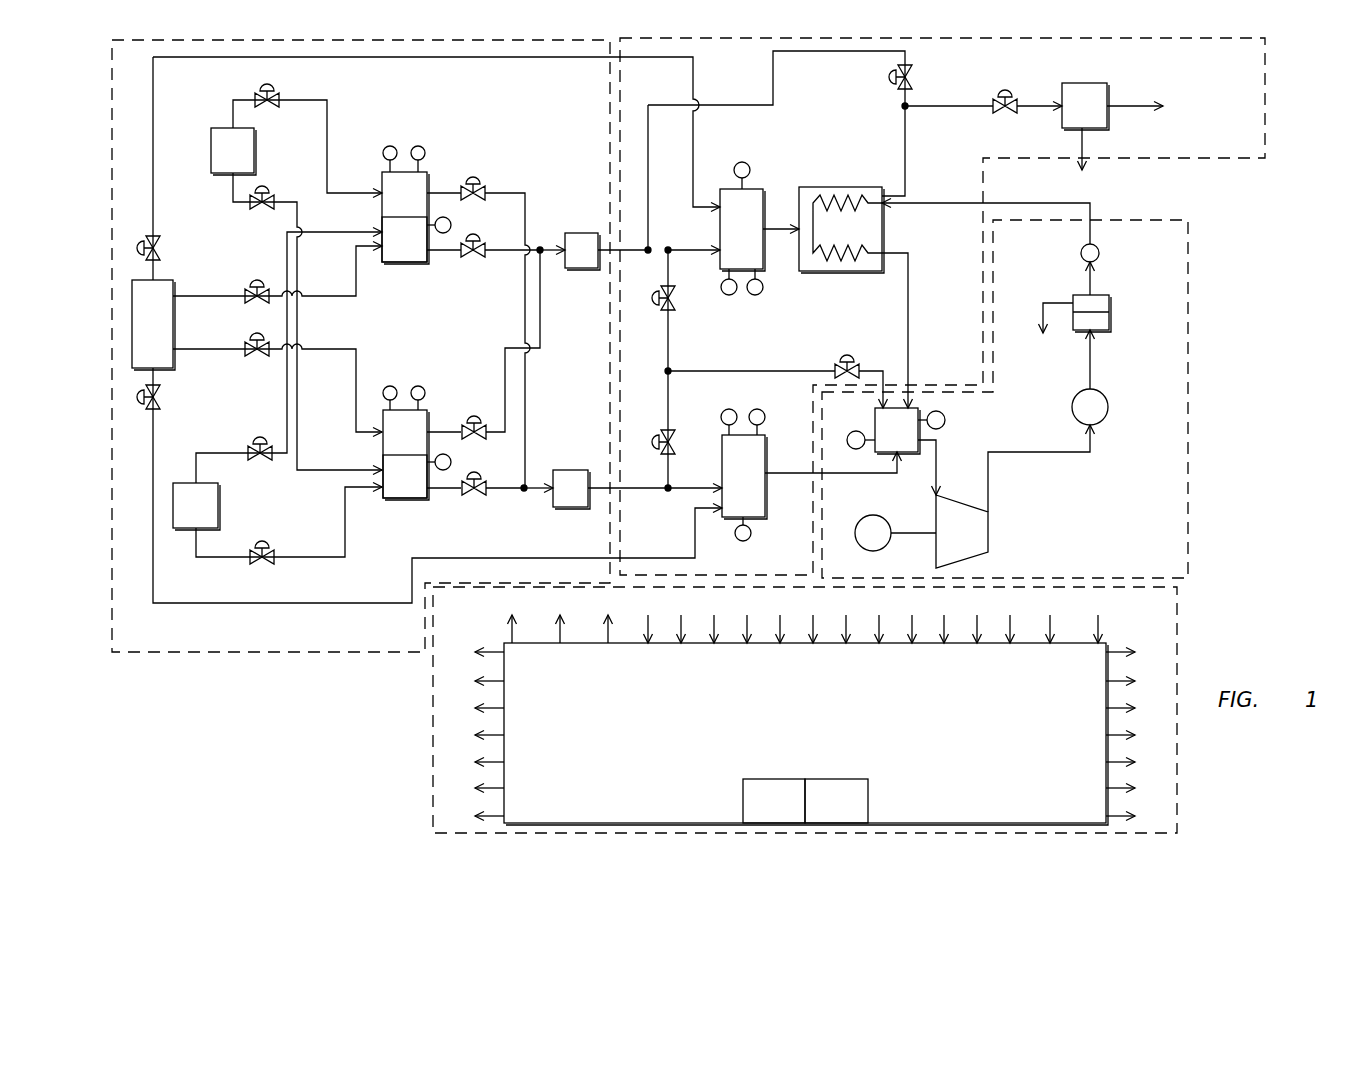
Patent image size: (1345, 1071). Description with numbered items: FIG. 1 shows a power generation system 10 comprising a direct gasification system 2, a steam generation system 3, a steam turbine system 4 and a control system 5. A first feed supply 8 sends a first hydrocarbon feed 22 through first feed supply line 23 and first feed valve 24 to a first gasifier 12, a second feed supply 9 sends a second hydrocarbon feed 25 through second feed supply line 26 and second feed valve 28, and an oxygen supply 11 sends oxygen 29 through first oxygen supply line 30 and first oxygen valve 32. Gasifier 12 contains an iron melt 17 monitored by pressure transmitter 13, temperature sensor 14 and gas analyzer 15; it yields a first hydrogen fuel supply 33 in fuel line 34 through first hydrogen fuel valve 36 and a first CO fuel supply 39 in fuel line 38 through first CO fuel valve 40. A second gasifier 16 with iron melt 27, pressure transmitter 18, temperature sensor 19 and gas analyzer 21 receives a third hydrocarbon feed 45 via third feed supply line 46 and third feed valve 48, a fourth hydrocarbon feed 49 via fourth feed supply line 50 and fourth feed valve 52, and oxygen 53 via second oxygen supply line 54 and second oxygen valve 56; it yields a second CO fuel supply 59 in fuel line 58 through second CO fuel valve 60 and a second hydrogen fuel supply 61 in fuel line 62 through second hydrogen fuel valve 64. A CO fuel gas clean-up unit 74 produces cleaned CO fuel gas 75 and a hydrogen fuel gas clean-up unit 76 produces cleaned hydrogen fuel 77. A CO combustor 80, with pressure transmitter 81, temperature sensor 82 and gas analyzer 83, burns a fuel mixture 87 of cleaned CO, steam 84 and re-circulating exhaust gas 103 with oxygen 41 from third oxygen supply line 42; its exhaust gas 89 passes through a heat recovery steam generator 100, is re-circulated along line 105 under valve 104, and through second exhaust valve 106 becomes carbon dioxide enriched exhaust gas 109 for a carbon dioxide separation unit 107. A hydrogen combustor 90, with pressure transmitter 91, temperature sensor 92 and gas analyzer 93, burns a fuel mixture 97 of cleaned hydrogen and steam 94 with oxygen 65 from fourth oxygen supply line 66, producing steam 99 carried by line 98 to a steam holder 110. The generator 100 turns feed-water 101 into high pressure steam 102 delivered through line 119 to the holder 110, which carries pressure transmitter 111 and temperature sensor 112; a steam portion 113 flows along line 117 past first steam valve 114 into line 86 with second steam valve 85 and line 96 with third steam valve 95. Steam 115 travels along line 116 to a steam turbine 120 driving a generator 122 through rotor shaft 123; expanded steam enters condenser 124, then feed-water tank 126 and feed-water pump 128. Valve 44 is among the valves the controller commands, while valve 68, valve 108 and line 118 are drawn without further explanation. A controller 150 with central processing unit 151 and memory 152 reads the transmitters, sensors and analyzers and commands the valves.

The direct gasification system 2 is at (215, 657).
The steam generation system 3 is at (1245, 162).
The steam turbine system 4 is at (1190, 347).
The control system 5 is at (1180, 645).
The first feed supply 8 is at (240, 162).
The second feed supply 9 is at (204, 517).
The power generation system 10 is at (1276, 274).
The oxygen supply 11 is at (165, 332).
The first gasifier 12 is at (419, 205).
The pressure transmitter 13 is at (393, 145).
The temperature sensor 14 is at (452, 225).
The gas analyzer 15 is at (424, 148).
The second gasifier 16 is at (419, 443).
The iron melt 17 is at (403, 245).
The pressure transmitter 18 is at (389, 386).
The temperature sensor 19 is at (452, 462).
The gas analyzer 21 is at (419, 386).
The first hydrocarbon feed 22 is at (313, 155).
The first feed supply line 23 is at (328, 112).
The first feed valve 24 is at (276, 95).
The second hydrocarbon feed 25 is at (370, 237).
The second feed supply line 26 is at (230, 452).
The iron melt 27 is at (407, 483).
The second feed valve 28 is at (262, 463).
The stream of oxygen 29 is at (224, 283).
The first oxygen supply line 30 is at (356, 275).
The first oxygen valve 32 is at (245, 303).
The first hydrogen fuel supply 33 is at (537, 405).
The fuel line 34 is at (448, 190).
The first hydrogen fuel valve 36 is at (483, 188).
The CO fuel supply line 38 is at (437, 262).
The first CO fuel supply 39 is at (512, 266).
The first CO fuel valve 40 is at (467, 262).
The stream of oxygen 41 is at (455, 68).
The third oxygen supply line 42 is at (502, 58).
The valve 44 is at (157, 238).
The third hydrocarbon feed 45 is at (305, 462).
The third feed supply line 46 is at (233, 202).
The third feed valve 48 is at (268, 192).
The fourth hydrocarbon feed 49 is at (332, 500).
The fourth feed supply line 50 is at (325, 563).
The fourth feed valve 52 is at (272, 552).
The stream of oxygen 53 is at (224, 363).
The second oxygen supply line 54 is at (315, 353).
The second oxygen valve 56 is at (256, 360).
The fuel line 58 is at (441, 432).
The second CO fuel supply 59 is at (553, 310).
The second CO fuel valve 60 is at (475, 414).
The second hydrogen fuel supply 61 is at (516, 506).
The hydrogen fuel supply line 62 is at (445, 497).
The second hydrogen fuel valve 64 is at (470, 498).
The stream of oxygen 65 is at (318, 617).
The fourth oxygen supply line 66 is at (242, 606).
The valve 68 is at (160, 408).
The CO fuel gas clean-up unit 74 is at (583, 233).
The cleaned CO fuel gas 75 is at (640, 262).
The hydrogen fuel gas clean-up unit 76 is at (578, 470).
The cleaned hydrogen fuel 77 is at (622, 508).
The CO combustor 80 is at (755, 231).
The pressure transmitter 81 is at (748, 162).
The temperature sensor 82 is at (733, 297).
The gas analyzer 83 is at (764, 290).
The steam 84 is at (680, 342).
The second steam valve 85 is at (668, 312).
The line 86 is at (680, 295).
The fuel mixture 87 is at (705, 243).
The exhaust gas 89 is at (772, 217).
The hydrogen combustor 90 is at (757, 481).
The pressure transmitter 91 is at (748, 541).
The temperature sensor 92 is at (733, 407).
The gas analyzer 93 is at (764, 415).
The steam 94 is at (680, 405).
The third steam valve 95 is at (668, 432).
The line 96 is at (672, 472).
The fuel mixture 97 is at (708, 497).
The line 98 is at (779, 473).
The source of steam 99 is at (803, 488).
The Heat Recovery Steam Generator 100 is at (835, 187).
The feed-water 101 is at (924, 216).
The high pressure steam 102 is at (921, 332).
The re-circulating exhaust gas 103 is at (735, 78).
The valve 104 is at (915, 70).
The line 105 is at (838, 58).
The second exhaust valve 106 is at (990, 118).
The CO2 separation unit 107 is at (1085, 83).
The valve 108 is at (950, 103).
The CO2 enriched exhaust gas 109 is at (1050, 92).
The steam holder 110 is at (918, 405).
The pressure transmitter 111 is at (855, 431).
The temperature sensor 112 is at (945, 421).
The portion of steam 113 is at (786, 359).
The first steam valve 114 is at (851, 360).
The steam 115 is at (948, 482).
The line 116 is at (935, 465).
The line 117 is at (745, 371).
The water line 118 is at (1018, 205).
The line 119 is at (910, 287).
The steam turbine 120 is at (989, 533).
The generator 122 is at (870, 515).
The rotor shaft 123 is at (923, 535).
The condenser 124 is at (1108, 404).
The feed-water tank 126 is at (1109, 302).
The feed-water pump 128 is at (1099, 252).
The controller 150 is at (822, 733).
The central processing unit 151 is at (793, 813).
The memory 152 is at (854, 813).